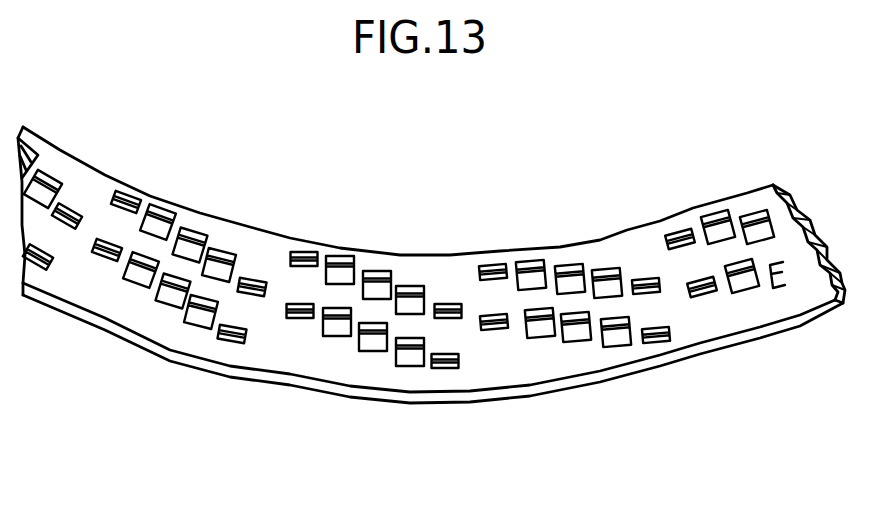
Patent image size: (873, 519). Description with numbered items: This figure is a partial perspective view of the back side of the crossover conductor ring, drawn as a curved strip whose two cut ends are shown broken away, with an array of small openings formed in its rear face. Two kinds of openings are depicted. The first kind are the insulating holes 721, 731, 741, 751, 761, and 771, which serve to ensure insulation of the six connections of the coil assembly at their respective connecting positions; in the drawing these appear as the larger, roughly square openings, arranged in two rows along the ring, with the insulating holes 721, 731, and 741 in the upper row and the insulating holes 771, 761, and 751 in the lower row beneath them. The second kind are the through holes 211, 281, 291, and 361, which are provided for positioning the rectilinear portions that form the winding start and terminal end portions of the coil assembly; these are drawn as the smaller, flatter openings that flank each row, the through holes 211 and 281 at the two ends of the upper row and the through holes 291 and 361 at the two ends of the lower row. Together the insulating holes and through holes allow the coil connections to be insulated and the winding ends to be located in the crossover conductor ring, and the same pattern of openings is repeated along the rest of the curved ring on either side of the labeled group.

The through hole 211 is at (298, 251).
The insulating hole 721 is at (338, 256).
The insulating hole 731 is at (375, 271).
The insulating hole 741 is at (408, 287).
The through hole 281 is at (443, 305).
The through hole 291 is at (295, 320).
The insulating hole 771 is at (337, 333).
The insulating hole 761 is at (375, 348).
The insulating hole 751 is at (407, 363).
The through hole 361 is at (448, 365).